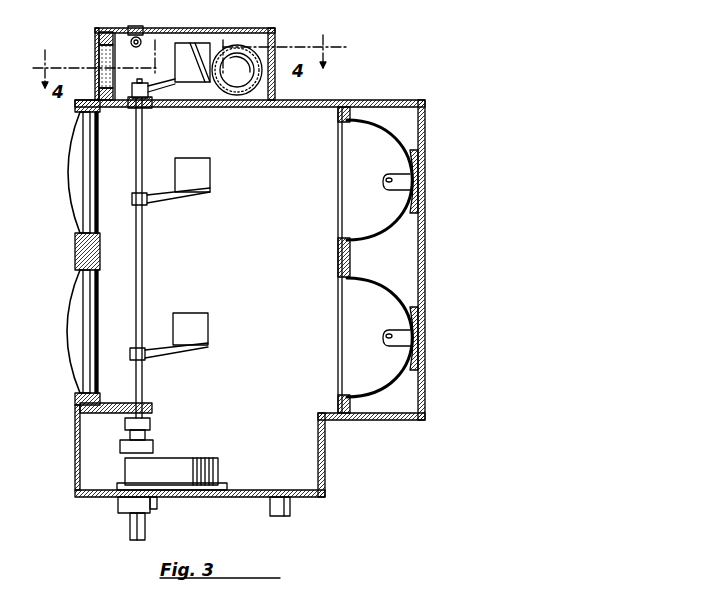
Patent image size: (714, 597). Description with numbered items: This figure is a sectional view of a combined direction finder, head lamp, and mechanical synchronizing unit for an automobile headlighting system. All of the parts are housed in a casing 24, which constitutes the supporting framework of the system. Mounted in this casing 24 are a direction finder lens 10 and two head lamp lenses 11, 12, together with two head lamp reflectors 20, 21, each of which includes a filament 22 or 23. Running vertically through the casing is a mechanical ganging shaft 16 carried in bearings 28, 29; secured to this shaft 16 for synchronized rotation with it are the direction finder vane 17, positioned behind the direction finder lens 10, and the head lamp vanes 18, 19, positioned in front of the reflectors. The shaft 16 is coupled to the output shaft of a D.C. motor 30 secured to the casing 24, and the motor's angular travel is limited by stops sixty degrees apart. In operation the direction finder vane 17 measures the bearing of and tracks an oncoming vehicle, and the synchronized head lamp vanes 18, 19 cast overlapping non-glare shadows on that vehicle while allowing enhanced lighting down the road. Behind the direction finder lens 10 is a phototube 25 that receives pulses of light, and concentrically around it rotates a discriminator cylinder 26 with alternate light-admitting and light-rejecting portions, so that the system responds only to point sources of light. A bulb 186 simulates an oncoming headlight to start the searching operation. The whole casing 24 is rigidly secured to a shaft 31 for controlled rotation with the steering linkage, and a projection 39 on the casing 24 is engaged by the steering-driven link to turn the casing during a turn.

The direction finder lens 10 is at (95, 62).
The lens 11 is at (72, 180).
The lens 12 is at (72, 338).
The shaft 16 is at (143, 263).
The direction finder vane 17 is at (183, 47).
The head lamp vane 18 is at (212, 172).
The head lamp vane 19 is at (208, 325).
The head lamp reflector 20 is at (400, 147).
The head lamp reflector 21 is at (400, 300).
The filament 22 is at (392, 188).
The filament 23 is at (392, 343).
The casing 24 is at (322, 95).
The phototube 25 is at (243, 57).
The discriminator cylinder 26 is at (225, 45).
The bearing 28 is at (132, 108).
The bearing 29 is at (150, 422).
The motor 30 is at (170, 462).
The shaft 31 is at (128, 527).
The projection 39 is at (268, 508).
The bulb 186 is at (155, 26).